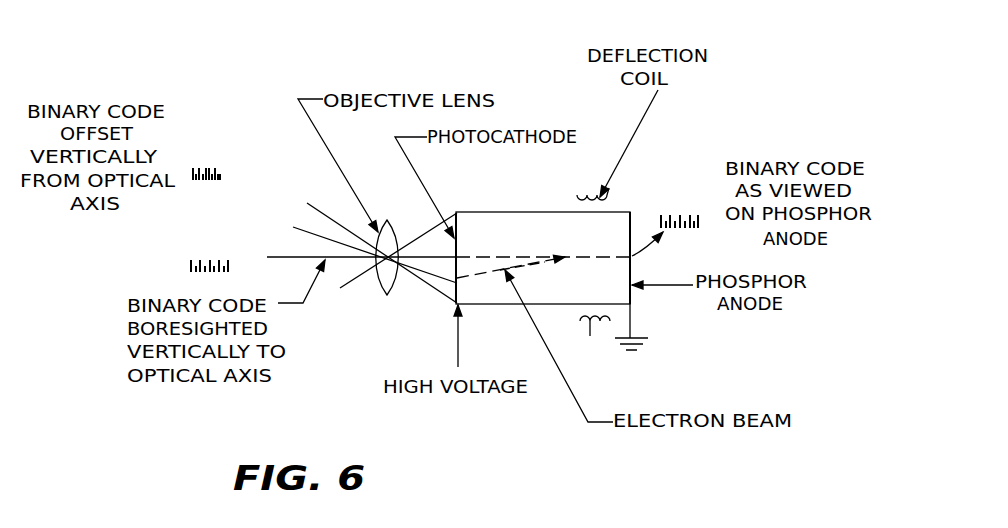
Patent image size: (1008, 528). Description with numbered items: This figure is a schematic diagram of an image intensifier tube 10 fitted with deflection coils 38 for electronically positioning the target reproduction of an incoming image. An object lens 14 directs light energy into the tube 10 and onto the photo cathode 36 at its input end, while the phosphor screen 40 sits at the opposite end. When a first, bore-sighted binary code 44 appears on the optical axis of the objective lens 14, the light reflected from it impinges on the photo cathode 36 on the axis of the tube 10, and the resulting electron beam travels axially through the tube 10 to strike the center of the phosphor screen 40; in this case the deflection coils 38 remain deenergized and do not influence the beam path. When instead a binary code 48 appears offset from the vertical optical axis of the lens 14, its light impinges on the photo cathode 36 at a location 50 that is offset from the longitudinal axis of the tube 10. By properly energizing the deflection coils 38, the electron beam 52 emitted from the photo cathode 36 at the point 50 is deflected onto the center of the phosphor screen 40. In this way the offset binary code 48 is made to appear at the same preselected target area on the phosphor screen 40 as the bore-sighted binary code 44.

The image intensifier tube 10 is at (475, 305).
The object lens 14 is at (382, 291).
The photo cathode 36 is at (458, 220).
The deflection coils 38 is at (610, 197).
The phosphor screen 40 is at (632, 272).
The first binary code 44 is at (230, 258).
The binary code 48 is at (222, 170).
The location 50 is at (458, 279).
The electron beam 52 is at (532, 265).